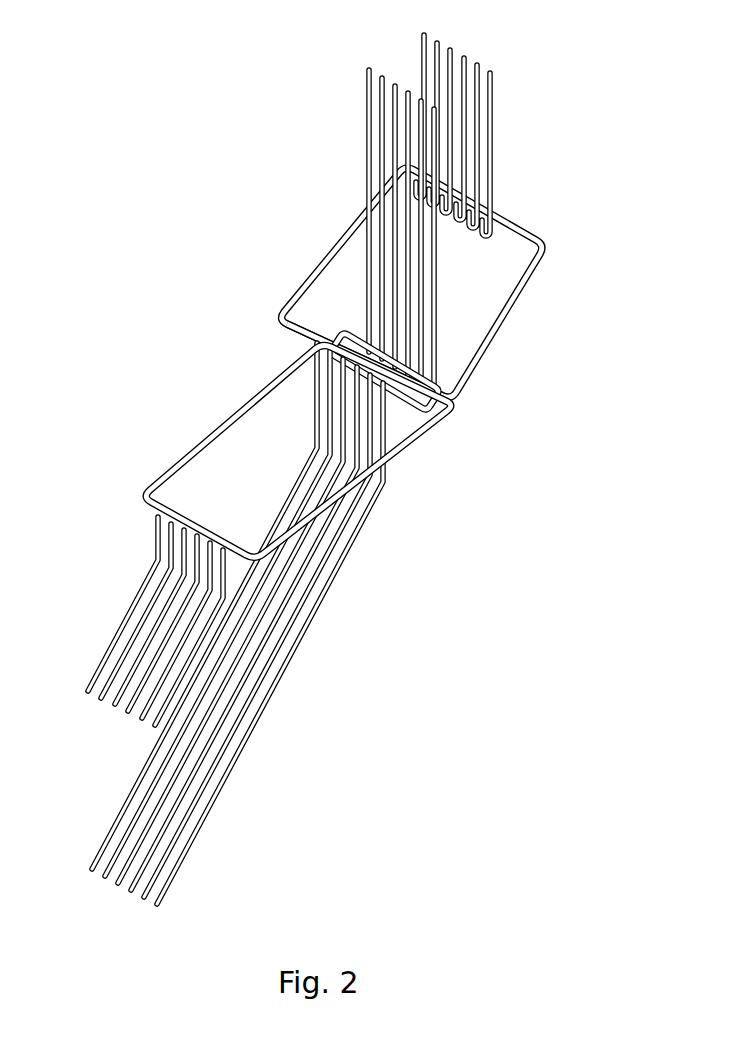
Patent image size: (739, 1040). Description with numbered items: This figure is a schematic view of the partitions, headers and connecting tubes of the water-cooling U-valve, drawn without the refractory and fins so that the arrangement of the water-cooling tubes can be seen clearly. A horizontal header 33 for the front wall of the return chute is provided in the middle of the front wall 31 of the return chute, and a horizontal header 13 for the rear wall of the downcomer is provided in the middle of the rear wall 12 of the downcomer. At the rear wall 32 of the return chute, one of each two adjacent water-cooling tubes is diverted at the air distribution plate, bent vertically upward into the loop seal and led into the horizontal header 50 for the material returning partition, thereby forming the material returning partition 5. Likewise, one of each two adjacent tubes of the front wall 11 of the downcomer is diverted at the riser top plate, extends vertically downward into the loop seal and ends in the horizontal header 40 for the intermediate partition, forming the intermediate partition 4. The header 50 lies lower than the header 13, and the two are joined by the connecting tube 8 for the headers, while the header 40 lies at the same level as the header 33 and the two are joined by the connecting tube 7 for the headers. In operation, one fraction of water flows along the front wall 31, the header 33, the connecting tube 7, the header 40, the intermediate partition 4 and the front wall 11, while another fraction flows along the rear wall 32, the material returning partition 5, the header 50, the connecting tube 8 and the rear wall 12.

The intermediate partition 4 is at (379, 294).
The material returning partition 5 is at (386, 441).
The connecting tube for the headers 7 is at (251, 465).
The connecting tube for the headers 8 is at (344, 221).
The front wall of the downcomer 11 is at (340, 210).
The rear wall of the downcomer 12 is at (508, 127).
The header for the rear wall of the downcomer 13 is at (459, 275).
The front wall of the return chute 31 is at (124, 664).
The rear wall of the return chute 32 is at (311, 623).
The header for the front wall of the return chute 33 is at (152, 525).
The header for the intermediate partition 40 is at (428, 364).
The header for the material returning partition 50 is at (376, 332).